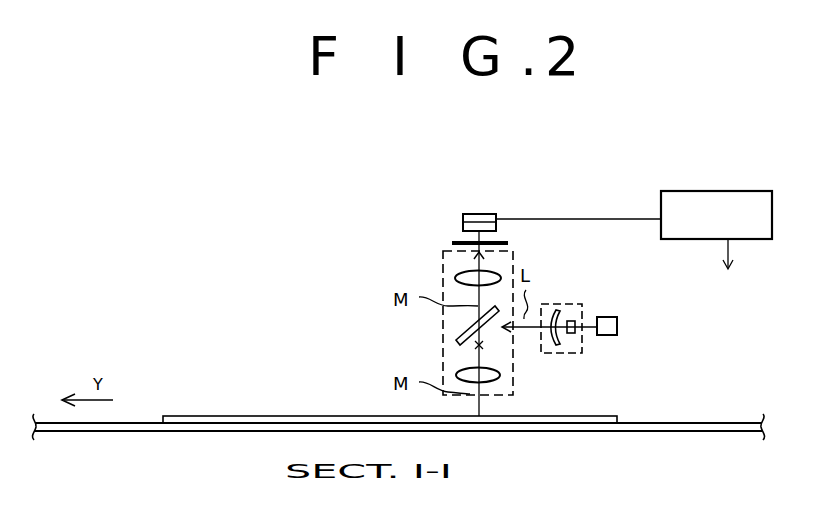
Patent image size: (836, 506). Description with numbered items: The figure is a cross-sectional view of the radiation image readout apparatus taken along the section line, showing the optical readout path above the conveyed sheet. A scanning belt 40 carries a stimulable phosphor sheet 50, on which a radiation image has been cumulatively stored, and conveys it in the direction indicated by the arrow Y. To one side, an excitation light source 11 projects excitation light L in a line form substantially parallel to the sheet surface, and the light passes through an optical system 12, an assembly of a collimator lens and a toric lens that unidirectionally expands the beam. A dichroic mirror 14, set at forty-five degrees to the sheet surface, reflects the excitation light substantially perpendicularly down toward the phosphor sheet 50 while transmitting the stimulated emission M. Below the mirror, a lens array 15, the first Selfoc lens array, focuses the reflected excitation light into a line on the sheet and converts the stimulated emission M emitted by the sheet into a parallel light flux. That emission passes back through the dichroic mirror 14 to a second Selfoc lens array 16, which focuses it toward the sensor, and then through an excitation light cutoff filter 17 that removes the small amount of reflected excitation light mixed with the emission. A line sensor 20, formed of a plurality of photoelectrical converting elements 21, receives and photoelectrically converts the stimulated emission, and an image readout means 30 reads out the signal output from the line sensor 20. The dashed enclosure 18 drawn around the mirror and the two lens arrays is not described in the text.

The excitation light source 11 is at (604, 317).
The optical system 12 is at (554, 304).
The dichroic mirror 14 is at (458, 342).
The lens array 15 is at (500, 376).
The second Selfoc lens array 16 is at (455, 272).
The excitation light cutoff filter 17 is at (455, 243).
The optical head 18 is at (515, 257).
The line sensor 20 is at (457, 212).
The photoelectrical converting elements 21 is at (463, 227).
The image readout means 30 is at (665, 191).
The scanning belt 40 is at (698, 423).
The stimulable phosphor sheet 50 is at (203, 416).